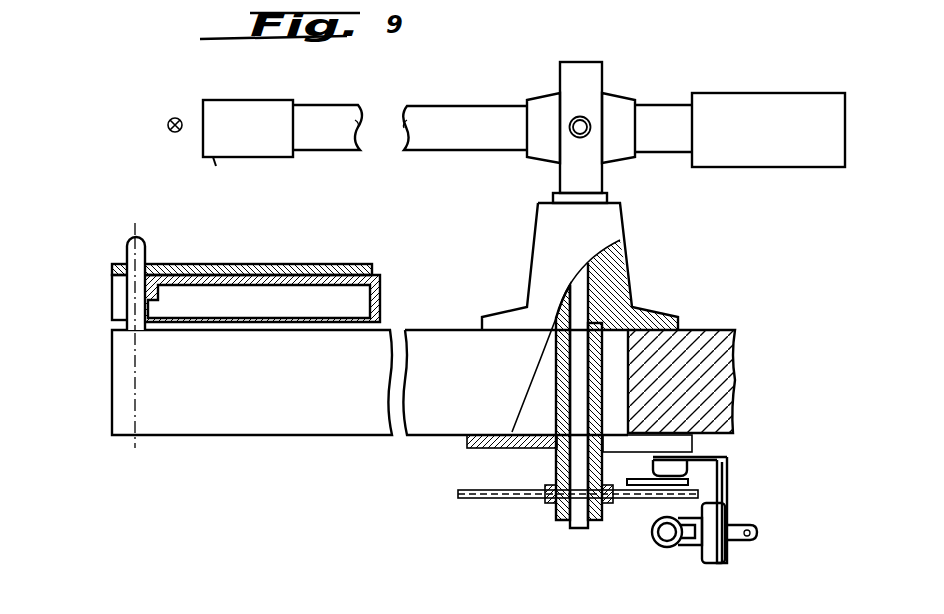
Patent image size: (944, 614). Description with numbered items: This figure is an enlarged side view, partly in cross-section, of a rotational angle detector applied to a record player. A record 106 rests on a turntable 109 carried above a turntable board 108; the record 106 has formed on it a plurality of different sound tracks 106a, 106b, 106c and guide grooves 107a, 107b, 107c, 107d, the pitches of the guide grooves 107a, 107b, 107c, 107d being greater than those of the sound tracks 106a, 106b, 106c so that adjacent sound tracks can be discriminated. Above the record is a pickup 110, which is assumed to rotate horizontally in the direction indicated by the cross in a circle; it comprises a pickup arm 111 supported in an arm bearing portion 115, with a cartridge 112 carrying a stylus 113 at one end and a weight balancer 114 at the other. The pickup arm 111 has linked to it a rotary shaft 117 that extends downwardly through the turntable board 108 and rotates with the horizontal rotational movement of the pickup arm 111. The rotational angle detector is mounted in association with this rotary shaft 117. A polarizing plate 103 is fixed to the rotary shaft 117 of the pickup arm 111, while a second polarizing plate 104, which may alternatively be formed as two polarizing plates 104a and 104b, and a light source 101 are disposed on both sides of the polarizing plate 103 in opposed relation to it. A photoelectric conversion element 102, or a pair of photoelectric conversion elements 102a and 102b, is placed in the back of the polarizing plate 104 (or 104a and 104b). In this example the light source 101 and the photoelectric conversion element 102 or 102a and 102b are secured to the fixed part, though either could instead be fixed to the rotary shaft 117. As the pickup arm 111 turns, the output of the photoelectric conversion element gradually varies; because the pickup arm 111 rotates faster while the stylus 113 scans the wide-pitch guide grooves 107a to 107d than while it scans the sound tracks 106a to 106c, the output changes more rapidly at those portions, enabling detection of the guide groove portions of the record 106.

The light source 101 is at (667, 548).
The photoelectric conversion element 102 is at (736, 487).
The photoelectric conversion element 102a is at (690, 458).
The photoelectric conversion element 102b is at (722, 510).
The polarizing plate 103 is at (641, 497).
The polarizing plate 104 is at (724, 525).
The polarizing plate 104a is at (657, 482).
The polarizing plate 104b is at (688, 483).
The record 106 is at (172, 263).
The sound track 106a is at (345, 264).
The sound track 106b is at (295, 264).
The sound track 106c is at (262, 264).
The guide groove 107a is at (368, 264).
The guide groove 107b is at (323, 264).
The guide groove 107c is at (283, 264).
The guide groove 107d is at (248, 264).
The turntable board 108 is at (377, 430).
The turntable 109 is at (381, 298).
The pickup 110 is at (458, 108).
The pickup arm 111 is at (331, 110).
The cartridge 112 is at (243, 108).
The stylus 113 is at (218, 165).
The weight balancer 114 is at (760, 96).
The arm bearing portion 115 is at (587, 62).
The rotary shaft 117 is at (558, 455).